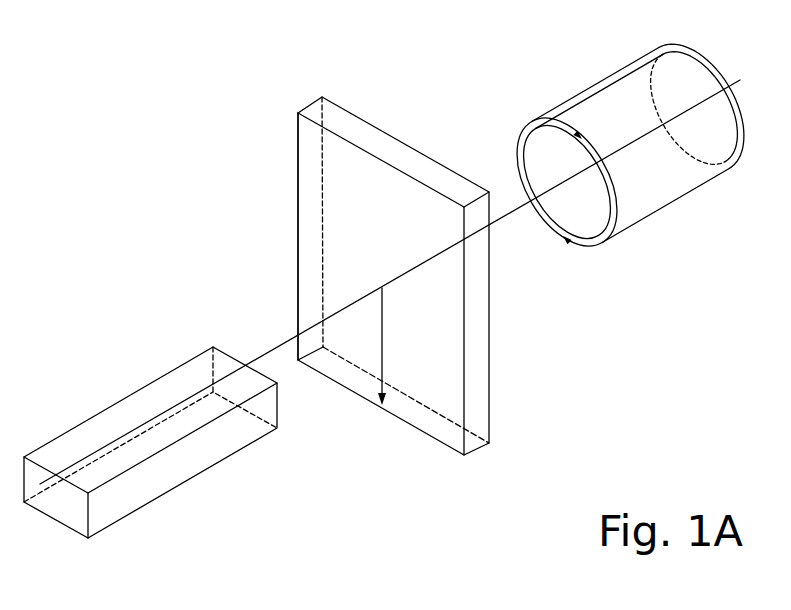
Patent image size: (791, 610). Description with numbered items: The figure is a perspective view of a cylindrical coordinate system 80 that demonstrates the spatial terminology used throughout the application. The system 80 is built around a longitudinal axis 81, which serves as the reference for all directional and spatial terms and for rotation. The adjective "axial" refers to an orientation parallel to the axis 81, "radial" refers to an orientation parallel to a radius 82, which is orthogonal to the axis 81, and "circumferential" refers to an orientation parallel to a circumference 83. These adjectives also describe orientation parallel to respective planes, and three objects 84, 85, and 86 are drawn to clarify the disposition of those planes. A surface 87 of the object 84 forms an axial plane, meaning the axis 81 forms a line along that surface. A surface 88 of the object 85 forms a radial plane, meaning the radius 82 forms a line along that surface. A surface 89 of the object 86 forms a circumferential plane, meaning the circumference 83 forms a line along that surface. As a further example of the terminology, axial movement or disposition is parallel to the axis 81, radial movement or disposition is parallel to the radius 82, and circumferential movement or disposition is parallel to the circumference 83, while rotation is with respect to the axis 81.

The cylindrical coordinate system 80 is at (250, 152).
The longitudinal axis 81 is at (733, 82).
The radius 82 is at (382, 340).
The circumference 83 is at (517, 147).
The object 84 is at (113, 525).
The object 85 is at (506, 456).
The object 86 is at (666, 224).
The surface 87 is at (108, 425).
The surface 88 is at (313, 233).
The surface 89 is at (593, 86).